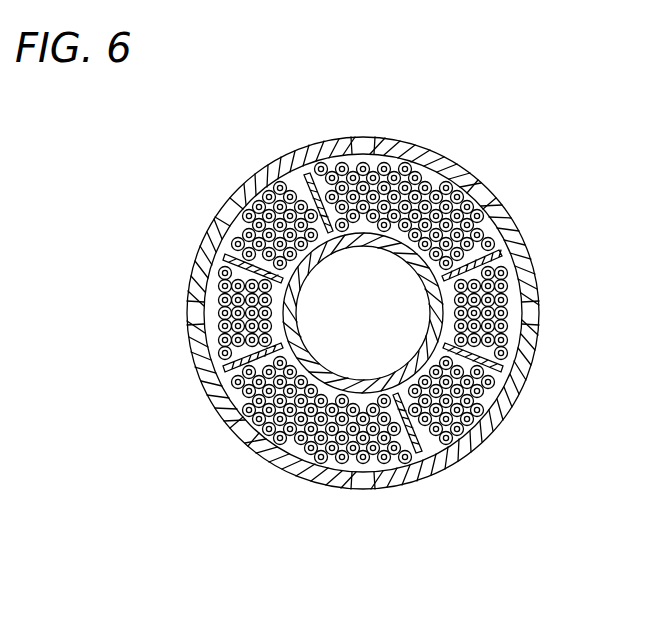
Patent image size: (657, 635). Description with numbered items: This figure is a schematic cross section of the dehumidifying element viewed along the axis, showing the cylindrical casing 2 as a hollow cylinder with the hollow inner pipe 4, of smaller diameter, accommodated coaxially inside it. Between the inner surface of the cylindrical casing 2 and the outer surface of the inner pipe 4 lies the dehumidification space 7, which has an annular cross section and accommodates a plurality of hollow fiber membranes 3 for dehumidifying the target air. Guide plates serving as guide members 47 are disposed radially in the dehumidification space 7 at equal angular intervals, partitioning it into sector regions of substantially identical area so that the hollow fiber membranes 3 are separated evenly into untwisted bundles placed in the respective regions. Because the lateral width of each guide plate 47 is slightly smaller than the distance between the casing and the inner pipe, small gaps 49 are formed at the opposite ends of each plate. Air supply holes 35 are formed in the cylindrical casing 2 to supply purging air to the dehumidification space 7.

The cylindrical casing 2 is at (432, 168).
The hollow fiber membranes 3 is at (203, 318).
The inner pipe 4 is at (420, 262).
The dehumidification space 7 is at (213, 355).
The air supply hole 35 is at (241, 432).
The guide member 47 is at (490, 338).
The gap 49 is at (502, 371).